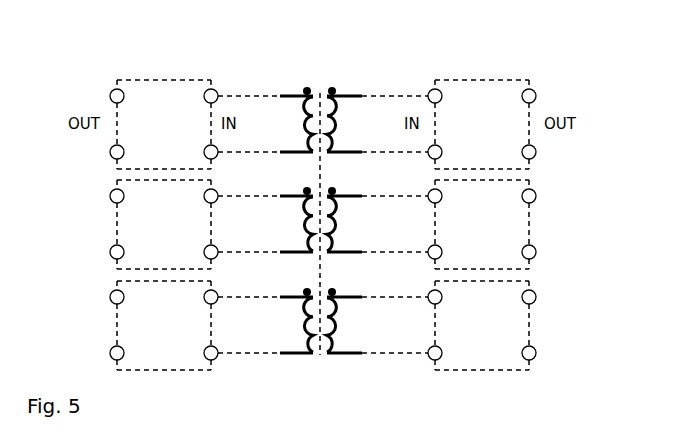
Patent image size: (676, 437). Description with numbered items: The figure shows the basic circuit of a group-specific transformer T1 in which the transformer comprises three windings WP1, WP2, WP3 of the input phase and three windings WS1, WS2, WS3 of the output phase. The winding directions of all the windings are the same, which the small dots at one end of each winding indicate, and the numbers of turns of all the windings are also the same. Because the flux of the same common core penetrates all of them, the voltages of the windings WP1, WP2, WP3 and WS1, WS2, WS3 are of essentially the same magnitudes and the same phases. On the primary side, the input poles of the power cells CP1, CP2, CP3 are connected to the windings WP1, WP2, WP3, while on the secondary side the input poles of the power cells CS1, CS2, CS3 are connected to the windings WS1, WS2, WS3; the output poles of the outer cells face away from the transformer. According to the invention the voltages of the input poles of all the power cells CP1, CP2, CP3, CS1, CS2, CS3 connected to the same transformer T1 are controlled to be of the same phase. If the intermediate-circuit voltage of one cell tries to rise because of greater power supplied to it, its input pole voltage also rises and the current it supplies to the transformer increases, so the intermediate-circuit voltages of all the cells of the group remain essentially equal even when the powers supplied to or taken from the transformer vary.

The group-specific transformer T1 is at (318, 205).
The power cell CP1 is at (164, 124).
The power cell CP2 is at (164, 224).
The power cell CP3 is at (164, 325).
The power cell CS1 is at (482, 124).
The power cell CS2 is at (482, 224).
The power cell CS3 is at (482, 325).
The winding of the input phase WP1 is at (265, 119).
The winding of the input phase WP2 is at (265, 219).
The winding of the input phase WP3 is at (265, 320).
The winding of the output phase WS1 is at (377, 119).
The winding of the output phase WS2 is at (377, 219).
The winding of the output phase WS3 is at (377, 320).